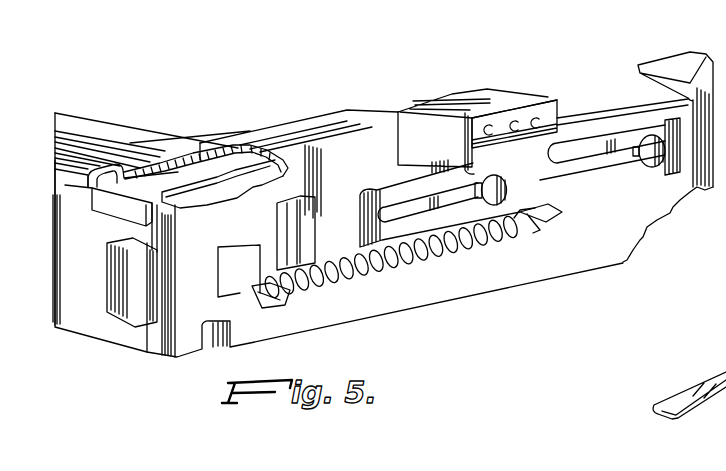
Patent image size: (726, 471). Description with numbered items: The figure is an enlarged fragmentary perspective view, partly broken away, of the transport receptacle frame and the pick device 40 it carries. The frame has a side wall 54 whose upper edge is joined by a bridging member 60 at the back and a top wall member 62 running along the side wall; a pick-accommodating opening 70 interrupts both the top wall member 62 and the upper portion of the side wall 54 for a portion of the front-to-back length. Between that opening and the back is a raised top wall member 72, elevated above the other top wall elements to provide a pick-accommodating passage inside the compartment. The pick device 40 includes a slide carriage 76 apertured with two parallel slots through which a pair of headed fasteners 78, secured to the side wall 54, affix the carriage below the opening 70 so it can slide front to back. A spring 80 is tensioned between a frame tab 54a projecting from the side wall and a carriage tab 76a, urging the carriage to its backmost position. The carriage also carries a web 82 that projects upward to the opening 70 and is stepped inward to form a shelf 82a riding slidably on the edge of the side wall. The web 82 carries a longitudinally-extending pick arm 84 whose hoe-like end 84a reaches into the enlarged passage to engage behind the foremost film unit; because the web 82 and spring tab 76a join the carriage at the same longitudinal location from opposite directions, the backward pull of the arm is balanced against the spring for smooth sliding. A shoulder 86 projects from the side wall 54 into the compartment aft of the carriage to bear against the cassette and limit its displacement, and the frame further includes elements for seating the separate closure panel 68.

The pick device 40 is at (486, 262).
The side wall 54 is at (565, 266).
The frame tab 54a is at (265, 300).
The bridging member 60 is at (98, 145).
The top wall member 62 is at (682, 62).
The closure panel 68 is at (83, 318).
The pick-accommodating opening 70 is at (617, 88).
The raised top wall member 72 is at (297, 135).
The slide carriage 76 is at (393, 193).
The carriage tab 76a is at (553, 215).
The headed fasteners 78 is at (645, 160).
The spring 80 is at (348, 293).
The web 82 is at (553, 118).
The shelf 82a is at (538, 128).
The pick arm 84 is at (478, 108).
The hoe-like end 84a is at (187, 190).
The shoulder 86 is at (297, 218).